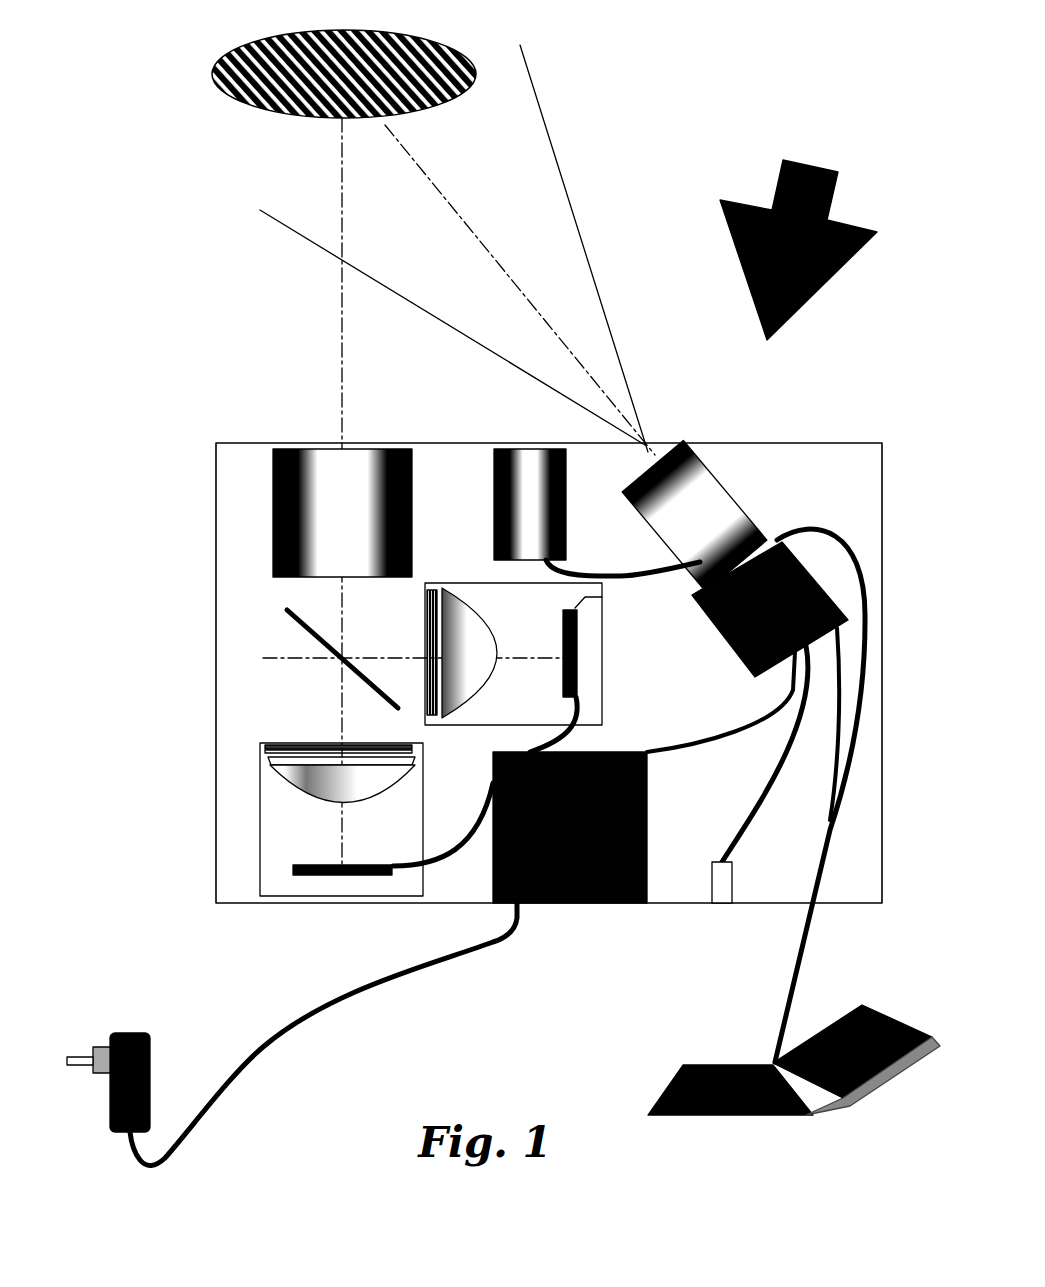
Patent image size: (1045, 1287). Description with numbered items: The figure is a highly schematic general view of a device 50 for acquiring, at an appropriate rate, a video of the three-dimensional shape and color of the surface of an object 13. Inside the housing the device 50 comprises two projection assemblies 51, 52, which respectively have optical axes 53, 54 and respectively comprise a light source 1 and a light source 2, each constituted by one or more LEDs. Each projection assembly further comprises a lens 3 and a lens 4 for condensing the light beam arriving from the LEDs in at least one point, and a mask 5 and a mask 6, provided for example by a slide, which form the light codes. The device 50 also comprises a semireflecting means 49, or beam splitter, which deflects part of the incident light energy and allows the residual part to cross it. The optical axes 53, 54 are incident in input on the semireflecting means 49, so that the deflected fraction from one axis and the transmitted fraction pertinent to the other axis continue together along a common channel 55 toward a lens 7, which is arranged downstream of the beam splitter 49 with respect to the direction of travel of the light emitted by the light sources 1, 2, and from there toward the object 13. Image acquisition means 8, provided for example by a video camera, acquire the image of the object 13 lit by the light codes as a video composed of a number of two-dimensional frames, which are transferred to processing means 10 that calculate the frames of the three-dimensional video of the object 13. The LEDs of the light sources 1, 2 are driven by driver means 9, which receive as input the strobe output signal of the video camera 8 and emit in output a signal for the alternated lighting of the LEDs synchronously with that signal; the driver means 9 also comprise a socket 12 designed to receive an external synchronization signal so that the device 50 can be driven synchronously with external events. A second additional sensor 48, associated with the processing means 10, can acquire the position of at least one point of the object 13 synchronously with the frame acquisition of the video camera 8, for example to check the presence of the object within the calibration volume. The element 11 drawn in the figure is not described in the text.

The light source 1 is at (293, 875).
The light source 2 is at (694, 524).
The lens 3 is at (292, 777).
The lens 4 is at (476, 600).
The mask 5 is at (262, 745).
The mask 6 is at (428, 590).
The lens 7 is at (273, 489).
The image acquisition means 8 is at (777, 540).
The driver means 9 is at (647, 802).
The processing means 10 is at (778, 1058).
The power supply plug 11 is at (128, 1030).
The socket 12 is at (716, 903).
The object 13 is at (255, 112).
The second additional sensor 48 is at (547, 442).
The semireflecting means 49 is at (295, 635).
The device 50 is at (798, 227).
The projection assembly 51 is at (341, 819).
The projection assembly 52 is at (513, 654).
The optical axis 53 is at (323, 654).
The optical axis 54 is at (414, 642).
The channel 55 is at (325, 280).